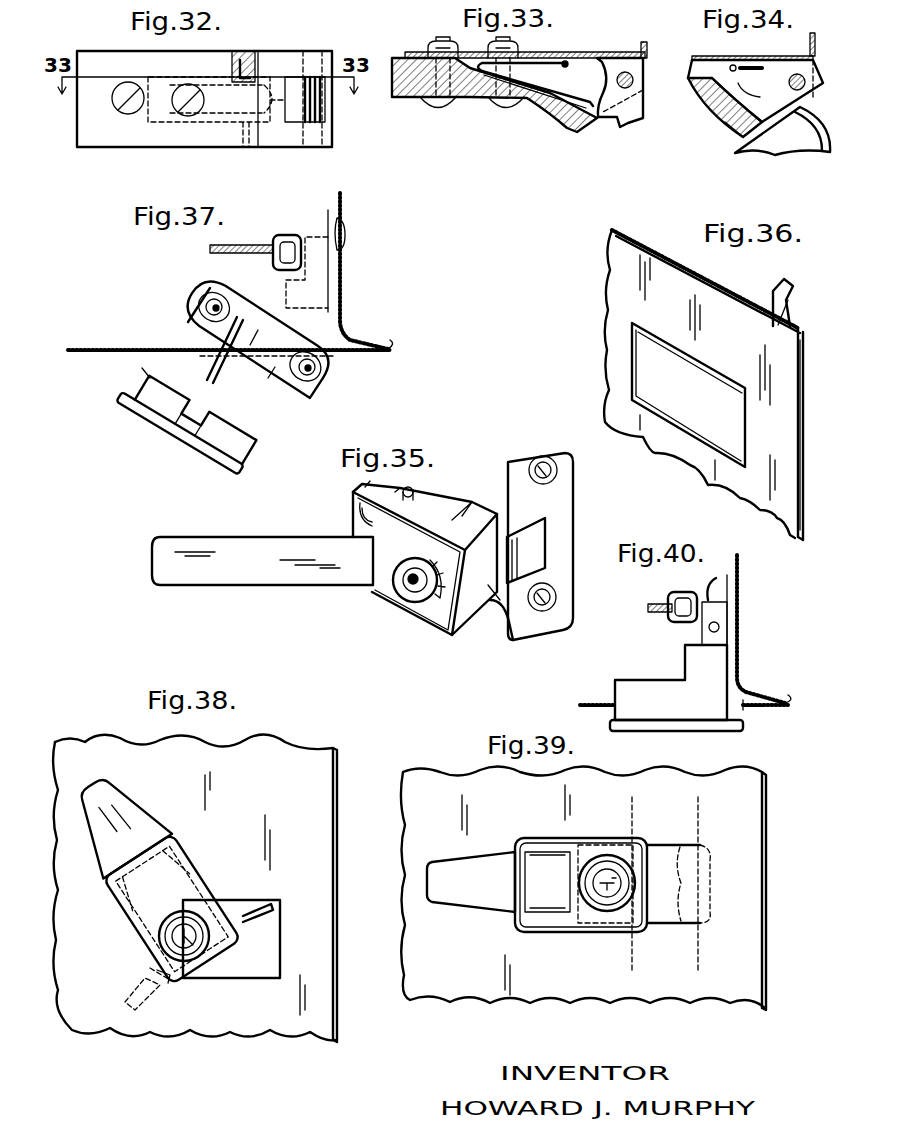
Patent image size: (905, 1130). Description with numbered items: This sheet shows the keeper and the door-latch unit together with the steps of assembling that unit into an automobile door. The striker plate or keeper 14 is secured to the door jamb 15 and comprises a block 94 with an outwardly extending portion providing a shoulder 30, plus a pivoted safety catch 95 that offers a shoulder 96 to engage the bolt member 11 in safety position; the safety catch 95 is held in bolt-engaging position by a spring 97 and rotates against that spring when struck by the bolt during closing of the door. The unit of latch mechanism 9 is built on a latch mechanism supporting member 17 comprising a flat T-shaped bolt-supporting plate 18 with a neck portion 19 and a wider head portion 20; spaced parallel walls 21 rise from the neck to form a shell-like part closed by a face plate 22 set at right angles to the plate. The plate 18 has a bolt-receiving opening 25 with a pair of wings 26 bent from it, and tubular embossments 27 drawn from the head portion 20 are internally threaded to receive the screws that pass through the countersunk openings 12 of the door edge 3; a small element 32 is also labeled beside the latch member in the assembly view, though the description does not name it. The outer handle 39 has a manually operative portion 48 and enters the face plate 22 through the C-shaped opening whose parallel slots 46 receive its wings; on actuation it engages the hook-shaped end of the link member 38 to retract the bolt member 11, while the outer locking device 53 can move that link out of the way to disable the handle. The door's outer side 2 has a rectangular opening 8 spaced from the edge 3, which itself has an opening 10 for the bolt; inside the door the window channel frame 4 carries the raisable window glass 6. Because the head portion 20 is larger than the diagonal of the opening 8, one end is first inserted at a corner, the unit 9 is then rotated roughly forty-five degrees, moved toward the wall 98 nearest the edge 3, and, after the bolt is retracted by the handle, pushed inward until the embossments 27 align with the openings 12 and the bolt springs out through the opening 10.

In FIG. 37, the outer side 2 is at (85, 355).
In FIG. 36, the outer side 2 is at (612, 262).
In FIG. 40, the outer side 2 is at (760, 708).
In FIG. 38, the outer side 2 is at (278, 763).
In FIG. 39, the outer side 2 is at (732, 995).
In FIG. 37, the edge 3 is at (344, 326).
In FIG. 36, the edge 3 is at (790, 306).
In FIG. 40, the edge 3 is at (742, 672).
In FIG. 37, the window channel frame 4 is at (288, 235).
In FIG. 40, the window channel frame 4 is at (680, 623).
In FIG. 37, the raisable window glass 6 is at (222, 247).
In FIG. 40, the raisable window glass 6 is at (648, 610).
In FIG. 36, the opening 8 is at (706, 372).
In FIG. 40, the opening 8 is at (748, 716).
In FIG. 38, the opening 8 is at (233, 978).
In FIG. 39, the opening 8 is at (662, 848).
In FIG. 35, the unit of latch mechanism 9 is at (503, 632).
In FIG. 37, the opening 10 is at (342, 283).
In FIG. 40, the opening 10 is at (740, 633).
In FIG. 34, the bolt member 11 is at (780, 150).
In FIG. 35, the bolt member 11 is at (535, 543).
In FIG. 37, the countersunk openings 12 is at (344, 229).
In FIG. 32, the striker plate or keeper 14 is at (212, 54).
In FIG. 33, the striker plate or keeper 14 is at (403, 98).
In FIG. 33, the door jamb 15 is at (616, 53).
In FIG. 34, the door jamb 15 is at (715, 57).
In FIG. 37, the latch mechanism supporting member 17 is at (142, 372).
In FIG. 35, the latch mechanism supporting member 17 is at (375, 491).
In FIG. 37, the bolt-supporting plate 18 is at (190, 302).
In FIG. 35, the bolt-supporting plate 18 is at (486, 602).
In FIG. 40, the bolt-supporting plate 18 is at (727, 578).
In FIG. 38, the bolt-supporting plate 18 is at (143, 1003).
In FIG. 35, the neck portion 19 is at (490, 595).
In FIG. 37, the head portion 20 is at (326, 225).
In FIG. 35, the head portion 20 is at (560, 546).
In FIG. 38, the head portion 20 is at (272, 918).
In FIG. 39, the head portion 20 is at (636, 818).
In FIG. 37, the spaced parallel walls 21 is at (160, 392).
In FIG. 35, the spaced parallel walls 21 is at (460, 520).
In FIG. 40, the spaced parallel walls 21 is at (628, 682).
In FIG. 37, the face plate 22 is at (204, 442).
In FIG. 35, the face plate 22 is at (442, 617).
In FIG. 40, the face plate 22 is at (690, 728).
In FIG. 38, the face plate 22 is at (190, 876).
In FIG. 39, the face plate 22 is at (536, 845).
In FIG. 37, the bolt-receiving opening 25 is at (255, 340).
In FIG. 35, the bolt-receiving opening 25 is at (553, 528).
In FIG. 37, the wings 26 is at (236, 330).
In FIG. 40, the wings 26 is at (712, 646).
In FIG. 37, the tubular embossments 27 is at (220, 298).
In FIG. 35, the tubular embossments 27 is at (552, 462).
In FIG. 32, the shoulder 30 is at (242, 136).
In FIG. 33, the shoulder 30 is at (548, 112).
In FIG. 34, the shoulder 30 is at (742, 120).
In FIG. 40, the spring 32 is at (706, 580).
In FIG. 35, the link member 38 is at (412, 490).
In FIG. 35, the outer handle 39 is at (215, 585).
In FIG. 38, the outer handle 39 is at (125, 800).
In FIG. 39, the outer handle 39 is at (455, 903).
In FIG. 35, the slots 46 is at (356, 502).
In FIG. 35, the manually operative portion 48 is at (290, 575).
In FIG. 38, the manually operative portion 48 is at (108, 823).
In FIG. 35, the outer locking device 53 is at (414, 596).
In FIG. 38, the outer locking device 53 is at (184, 936).
In FIG. 39, the outer locking device 53 is at (603, 906).
In FIG. 32, the block 94 is at (105, 137).
In FIG. 33, the block 94 is at (482, 98).
In FIG. 34, the block 94 is at (698, 98).
In FIG. 32, the safety catch 95 is at (325, 108).
In FIG. 33, the safety catch 95 is at (645, 88).
In FIG. 34, the safety catch 95 is at (800, 99).
In FIG. 32, the shoulder 96 is at (297, 85).
In FIG. 33, the shoulder 96 is at (620, 125).
In FIG. 34, the shoulder 96 is at (740, 70).
In FIG. 32, the spring 97 is at (258, 136).
In FIG. 33, the spring 97 is at (582, 100).
In FIG. 34, the spring 97 is at (760, 67).
In FIG. 37, the wall 98 is at (338, 352).
In FIG. 36, the wall 98 is at (742, 415).
In FIG. 38, the wall 98 is at (280, 934).
In FIG. 39, the wall 98 is at (700, 890).